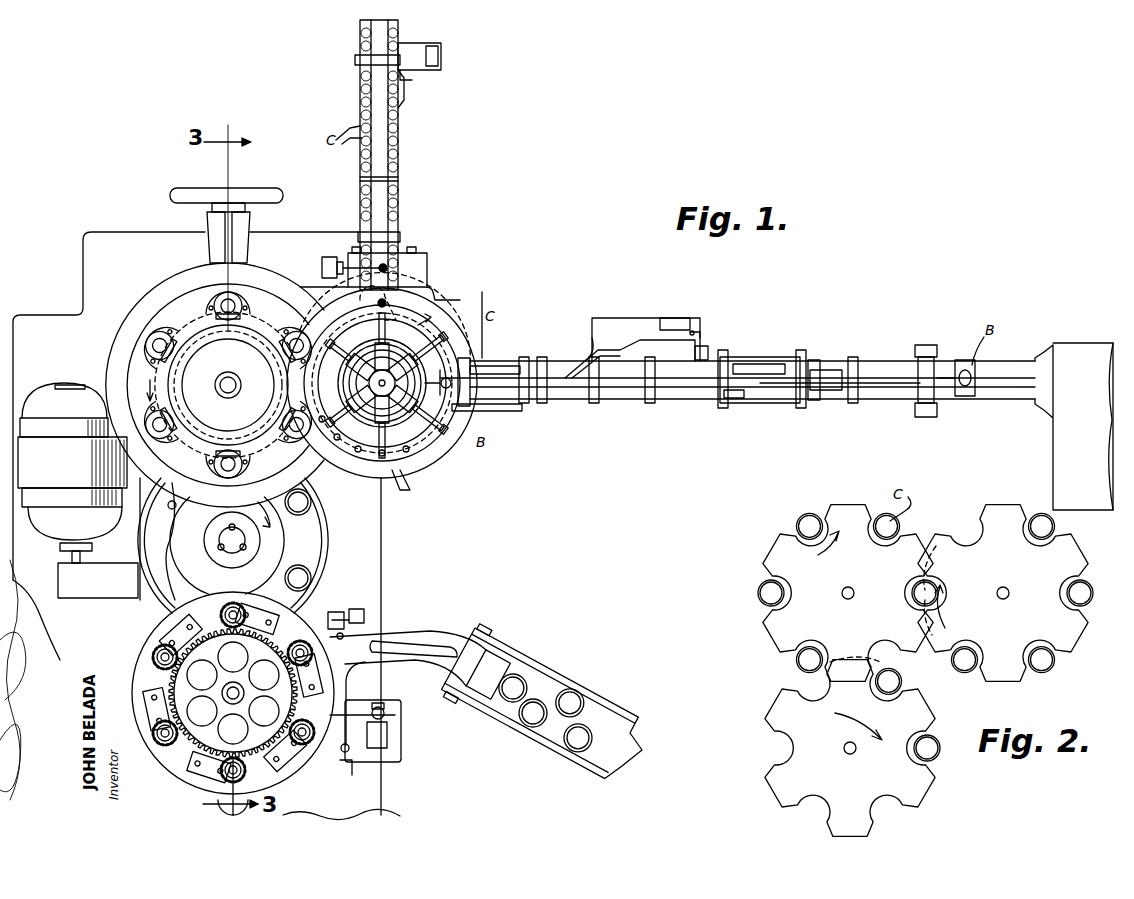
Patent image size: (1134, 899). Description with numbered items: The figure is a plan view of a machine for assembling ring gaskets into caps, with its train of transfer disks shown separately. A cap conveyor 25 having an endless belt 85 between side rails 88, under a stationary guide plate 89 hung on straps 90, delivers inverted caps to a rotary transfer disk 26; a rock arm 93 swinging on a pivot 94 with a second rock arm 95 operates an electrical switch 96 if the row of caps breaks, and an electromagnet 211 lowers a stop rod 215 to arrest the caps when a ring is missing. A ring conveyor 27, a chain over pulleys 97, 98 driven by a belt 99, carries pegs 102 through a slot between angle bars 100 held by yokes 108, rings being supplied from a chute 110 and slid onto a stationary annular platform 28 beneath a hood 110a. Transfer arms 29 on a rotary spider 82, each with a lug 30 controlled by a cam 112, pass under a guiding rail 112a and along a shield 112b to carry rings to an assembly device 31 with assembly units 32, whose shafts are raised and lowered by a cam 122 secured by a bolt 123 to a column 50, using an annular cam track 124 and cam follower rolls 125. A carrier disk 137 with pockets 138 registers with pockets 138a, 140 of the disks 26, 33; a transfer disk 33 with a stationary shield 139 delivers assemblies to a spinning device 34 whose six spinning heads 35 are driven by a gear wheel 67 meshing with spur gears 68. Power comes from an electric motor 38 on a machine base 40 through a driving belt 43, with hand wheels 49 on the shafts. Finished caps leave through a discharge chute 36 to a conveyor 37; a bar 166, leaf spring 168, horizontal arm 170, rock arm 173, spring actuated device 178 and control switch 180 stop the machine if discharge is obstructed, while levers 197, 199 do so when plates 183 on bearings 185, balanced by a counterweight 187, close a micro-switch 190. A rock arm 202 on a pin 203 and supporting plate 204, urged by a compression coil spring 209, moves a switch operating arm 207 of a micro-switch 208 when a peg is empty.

In FIG. 1, the cap conveyor 25 is at (348, 126).
In FIG. 1, the rotary transfer disk 26 is at (440, 305).
In FIG. 2, the rotary transfer disk 26 is at (1070, 553).
In FIG. 1, the ring conveyor 27 is at (870, 392).
In FIG. 1, the stationary annular platform 28 is at (470, 368).
In FIG. 1, the transfer arms 29 is at (388, 326).
In FIG. 1, the lug 30 is at (455, 340).
In FIG. 1, the assembly device 31 is at (142, 280).
In FIG. 1, the assembly units 32 is at (150, 345).
In FIG. 1, the transfer disk 33 is at (312, 537).
In FIG. 2, the transfer disk 33 is at (785, 702).
In FIG. 1, the spinning device 34 is at (145, 632).
In FIG. 1, the spinning heads 35 is at (155, 753).
In FIG. 1, the discharge chute 36 is at (412, 631).
In FIG. 1, the conveyor 37 is at (555, 663).
In FIG. 1, the electric motor 38 is at (44, 398).
In FIG. 1, the machine base 40 is at (45, 320).
In FIG. 1, the driving belt 43 is at (116, 575).
In FIG. 1, the hand wheels 49 is at (262, 195).
In FIG. 2, the column 50 is at (846, 589).
In FIG. 1, the gear wheel 67 is at (272, 655).
In FIG. 1, the spur gears 68 is at (295, 700).
In FIG. 1, the rotary spider 82 is at (395, 405).
In FIG. 1, the endless belt 85 is at (366, 203).
In FIG. 1, the side rails 88 is at (398, 196).
In FIG. 1, the stationary guide plate 89 is at (378, 160).
In FIG. 1, the straps 90 is at (356, 63).
In FIG. 1, the rock arm 93 is at (404, 104).
In FIG. 1, the pivot 94 is at (402, 76).
In FIG. 1, the second rock arm 95 is at (424, 68).
In FIG. 1, the electrical switch 96 is at (438, 46).
In FIG. 1, the pulley 97 is at (472, 388).
In FIG. 1, the pulley 98 is at (945, 390).
In FIG. 1, the belt 99 is at (480, 412).
In FIG. 1, the angle bars 100 is at (838, 392).
In FIG. 1, the pegs 102 is at (700, 395).
In FIG. 1, the yokes 108 is at (600, 400).
In FIG. 1, the chute 110 is at (1003, 388).
In FIG. 1, the hood 110a is at (500, 366).
In FIG. 1, the cam 112 is at (375, 345).
In FIG. 1, the arc-shaped guiding rail 112a is at (440, 450).
In FIG. 1, the arc-shaped shield 112b is at (400, 470).
In FIG. 1, the cam 122 is at (258, 328).
In FIG. 1, the bolt 123 is at (233, 378).
In FIG. 1, the annular cam track 124 is at (202, 333).
In FIG. 1, the cam follower rolls 125 is at (222, 335).
In FIG. 2, the carrier disk 137 is at (785, 547).
In FIG. 2, the pockets 138 is at (900, 644).
In FIG. 2, the pockets 138a is at (965, 540).
In FIG. 1, the stationary shield 139 is at (320, 500).
In FIG. 1, the pockets 140 is at (178, 506).
In FIG. 2, the pockets 140 is at (788, 747).
In FIG. 1, the bar 166 is at (368, 731).
In FIG. 1, the leaf spring 168 is at (355, 762).
In FIG. 1, the horizontal arm 170 is at (352, 712).
In FIG. 1, the rock arm 173 is at (332, 630).
In FIG. 1, the spring actuated device 178 is at (380, 708).
In FIG. 1, the control switch 180 is at (387, 734).
In FIG. 1, the plates 183 is at (805, 360).
In FIG. 1, the bearings 185 is at (772, 395).
In FIG. 1, the counterweight 187 is at (826, 370).
In FIG. 1, the micro-switch 190 is at (762, 362).
In FIG. 1, the lever 197 is at (342, 634).
In FIG. 1, the lever 199 is at (359, 584).
In FIG. 1, the rock arm 202 is at (622, 348).
In FIG. 1, the pin 203 is at (578, 345).
In FIG. 1, the supporting plate 204 is at (604, 326).
In FIG. 1, the switch operating arm 207 is at (700, 333).
In FIG. 1, the micro-switch 208 is at (678, 322).
In FIG. 1, the compression coil spring 209 is at (708, 352).
In FIG. 1, the electromagnet 211 is at (332, 256).
In FIG. 1, the stop rod 215 is at (387, 267).